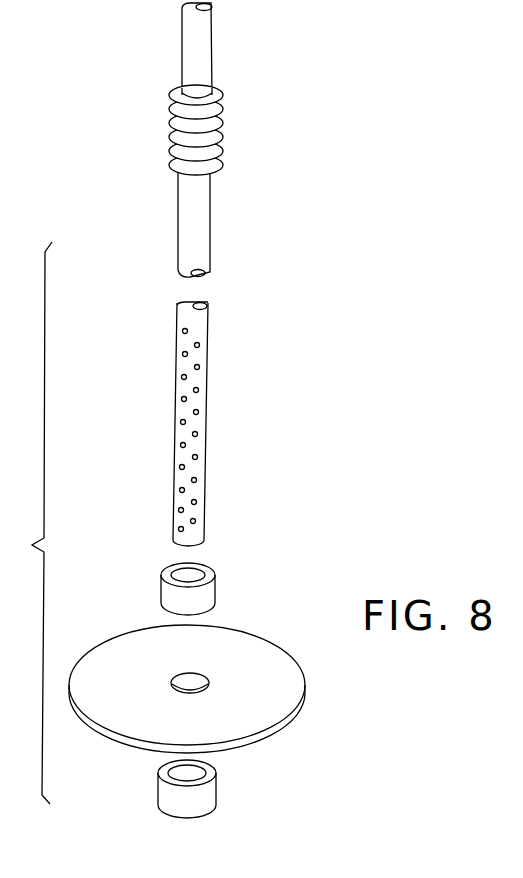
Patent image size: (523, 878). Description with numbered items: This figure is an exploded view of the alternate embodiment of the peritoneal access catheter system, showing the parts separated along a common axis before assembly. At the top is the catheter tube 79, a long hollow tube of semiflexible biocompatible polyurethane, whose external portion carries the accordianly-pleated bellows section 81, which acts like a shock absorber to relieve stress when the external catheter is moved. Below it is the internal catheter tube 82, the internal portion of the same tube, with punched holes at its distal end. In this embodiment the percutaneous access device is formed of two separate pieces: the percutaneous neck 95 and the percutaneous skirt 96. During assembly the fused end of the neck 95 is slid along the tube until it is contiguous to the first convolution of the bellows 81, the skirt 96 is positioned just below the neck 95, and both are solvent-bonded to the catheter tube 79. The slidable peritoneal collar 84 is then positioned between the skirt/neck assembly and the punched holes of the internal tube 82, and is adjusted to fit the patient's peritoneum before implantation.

The catheter tube 79 is at (211, 239).
The bellows section 81 is at (223, 139).
The internal catheter tube 82 is at (208, 318).
The percutaneous neck 95 is at (215, 579).
The percutaneous skirt 96 is at (305, 680).
The peritoneal collar 84 is at (216, 780).